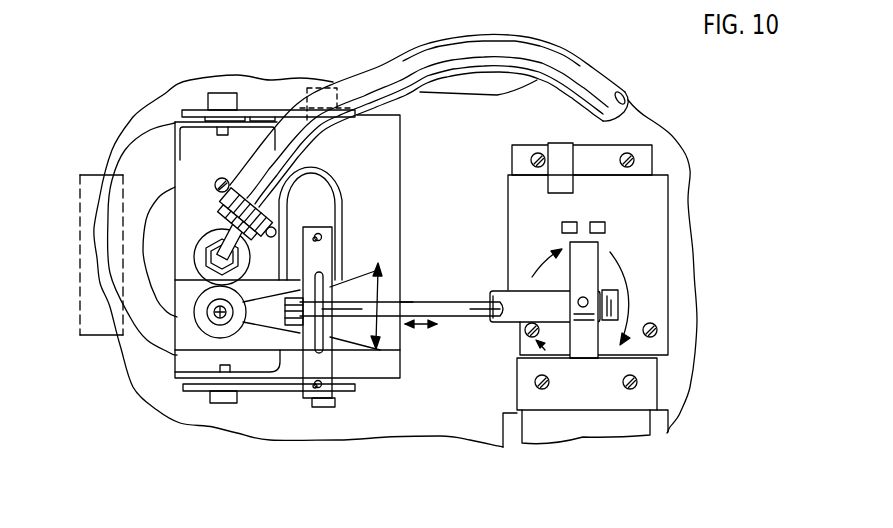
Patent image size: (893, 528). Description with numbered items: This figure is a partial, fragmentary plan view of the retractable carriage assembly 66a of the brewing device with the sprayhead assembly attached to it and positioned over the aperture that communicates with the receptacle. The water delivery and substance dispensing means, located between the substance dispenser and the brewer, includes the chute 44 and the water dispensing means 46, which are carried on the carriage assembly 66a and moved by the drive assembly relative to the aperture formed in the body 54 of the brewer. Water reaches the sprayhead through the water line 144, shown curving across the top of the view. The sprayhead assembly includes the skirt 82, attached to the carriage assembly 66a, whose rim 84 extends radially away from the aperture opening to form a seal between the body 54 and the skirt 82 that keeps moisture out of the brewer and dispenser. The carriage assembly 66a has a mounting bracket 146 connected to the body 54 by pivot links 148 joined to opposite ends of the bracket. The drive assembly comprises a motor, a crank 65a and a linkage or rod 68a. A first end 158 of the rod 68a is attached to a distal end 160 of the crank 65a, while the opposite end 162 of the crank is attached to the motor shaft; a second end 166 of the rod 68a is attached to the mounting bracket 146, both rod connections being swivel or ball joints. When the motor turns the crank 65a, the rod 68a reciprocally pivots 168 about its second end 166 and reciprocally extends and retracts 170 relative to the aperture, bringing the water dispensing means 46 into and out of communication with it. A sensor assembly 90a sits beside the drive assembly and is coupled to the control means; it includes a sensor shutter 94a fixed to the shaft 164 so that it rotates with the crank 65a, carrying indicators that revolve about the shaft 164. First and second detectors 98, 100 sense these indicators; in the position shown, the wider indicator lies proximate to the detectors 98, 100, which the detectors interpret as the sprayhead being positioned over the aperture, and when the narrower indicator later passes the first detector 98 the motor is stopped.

The chute 44 is at (80, 240).
The water dispensing means 46 is at (128, 352).
The body 54 is at (390, 438).
The crank 65a is at (518, 298).
The carriage assembly 66a is at (285, 405).
The rod 68a is at (425, 298).
The skirt 82 is at (130, 170).
The rim 84 is at (155, 162).
The sensor assembly 90a is at (655, 238).
The sensor shutter 94a is at (587, 358).
The first detector 98 is at (577, 220).
The second detector 100 is at (605, 230).
The water line 144 is at (440, 53).
The mounting bracket 146 is at (183, 138).
The pivot links 148 is at (277, 110).
The first end of rod 158 is at (468, 318).
The distal end of crank 160 is at (497, 313).
The opposite end of crank 162 is at (620, 297).
The shaft 164 is at (582, 293).
The second end of rod 166 is at (203, 330).
The reciprocal pivoting motion 168 is at (413, 300).
The reciprocal extending and retracting motion 170 is at (423, 328).